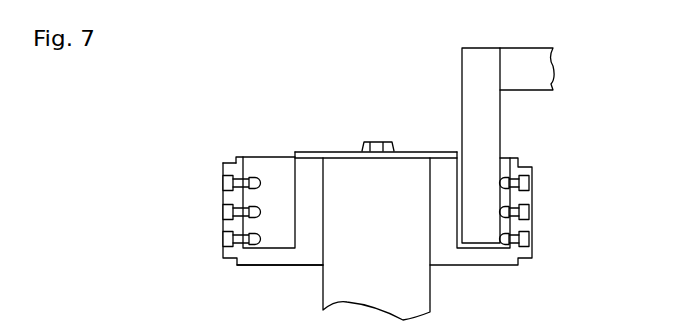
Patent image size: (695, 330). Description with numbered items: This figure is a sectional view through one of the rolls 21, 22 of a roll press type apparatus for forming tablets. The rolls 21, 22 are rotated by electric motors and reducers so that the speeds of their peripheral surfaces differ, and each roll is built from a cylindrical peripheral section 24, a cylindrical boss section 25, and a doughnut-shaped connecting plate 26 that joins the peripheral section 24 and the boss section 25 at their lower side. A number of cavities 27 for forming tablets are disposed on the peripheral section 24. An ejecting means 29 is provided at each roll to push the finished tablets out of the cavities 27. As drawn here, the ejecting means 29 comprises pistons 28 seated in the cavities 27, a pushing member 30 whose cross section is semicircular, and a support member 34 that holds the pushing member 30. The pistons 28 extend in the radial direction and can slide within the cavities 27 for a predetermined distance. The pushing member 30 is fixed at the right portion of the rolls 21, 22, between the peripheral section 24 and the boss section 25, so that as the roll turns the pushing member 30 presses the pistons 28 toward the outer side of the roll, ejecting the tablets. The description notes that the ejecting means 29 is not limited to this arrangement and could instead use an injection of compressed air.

The roll 21 is at (297, 102).
The roll 22 is at (375, 106).
The peripheral section 24 is at (235, 163).
The boss section 25 is at (307, 220).
The connecting plate 26 is at (283, 257).
The cavities 27 is at (223, 182).
The pistons 28 is at (532, 178).
The ejecting means 29 is at (443, 110).
The pushing member 30 is at (488, 128).
The support member 34 is at (542, 66).